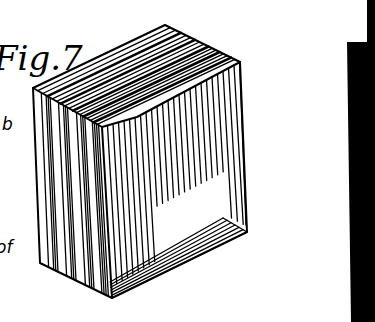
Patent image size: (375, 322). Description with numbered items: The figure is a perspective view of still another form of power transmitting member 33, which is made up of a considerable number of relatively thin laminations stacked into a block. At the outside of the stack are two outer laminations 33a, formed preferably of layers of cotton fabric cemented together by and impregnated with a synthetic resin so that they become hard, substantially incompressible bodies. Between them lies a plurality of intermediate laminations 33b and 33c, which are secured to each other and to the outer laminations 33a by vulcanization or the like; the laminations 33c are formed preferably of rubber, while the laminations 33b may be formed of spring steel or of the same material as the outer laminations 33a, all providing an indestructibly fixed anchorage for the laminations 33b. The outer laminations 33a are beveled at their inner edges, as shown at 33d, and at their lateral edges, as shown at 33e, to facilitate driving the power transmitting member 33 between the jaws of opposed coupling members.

The power transmitting member 33 is at (201, 34).
The outer laminations 33a is at (149, 24).
The intermediate laminations 33b is at (84, 272).
The intermediate laminations 33c is at (106, 288).
The bevel at inner edges 33d is at (162, 264).
The bevel at lateral edges 33e is at (231, 90).